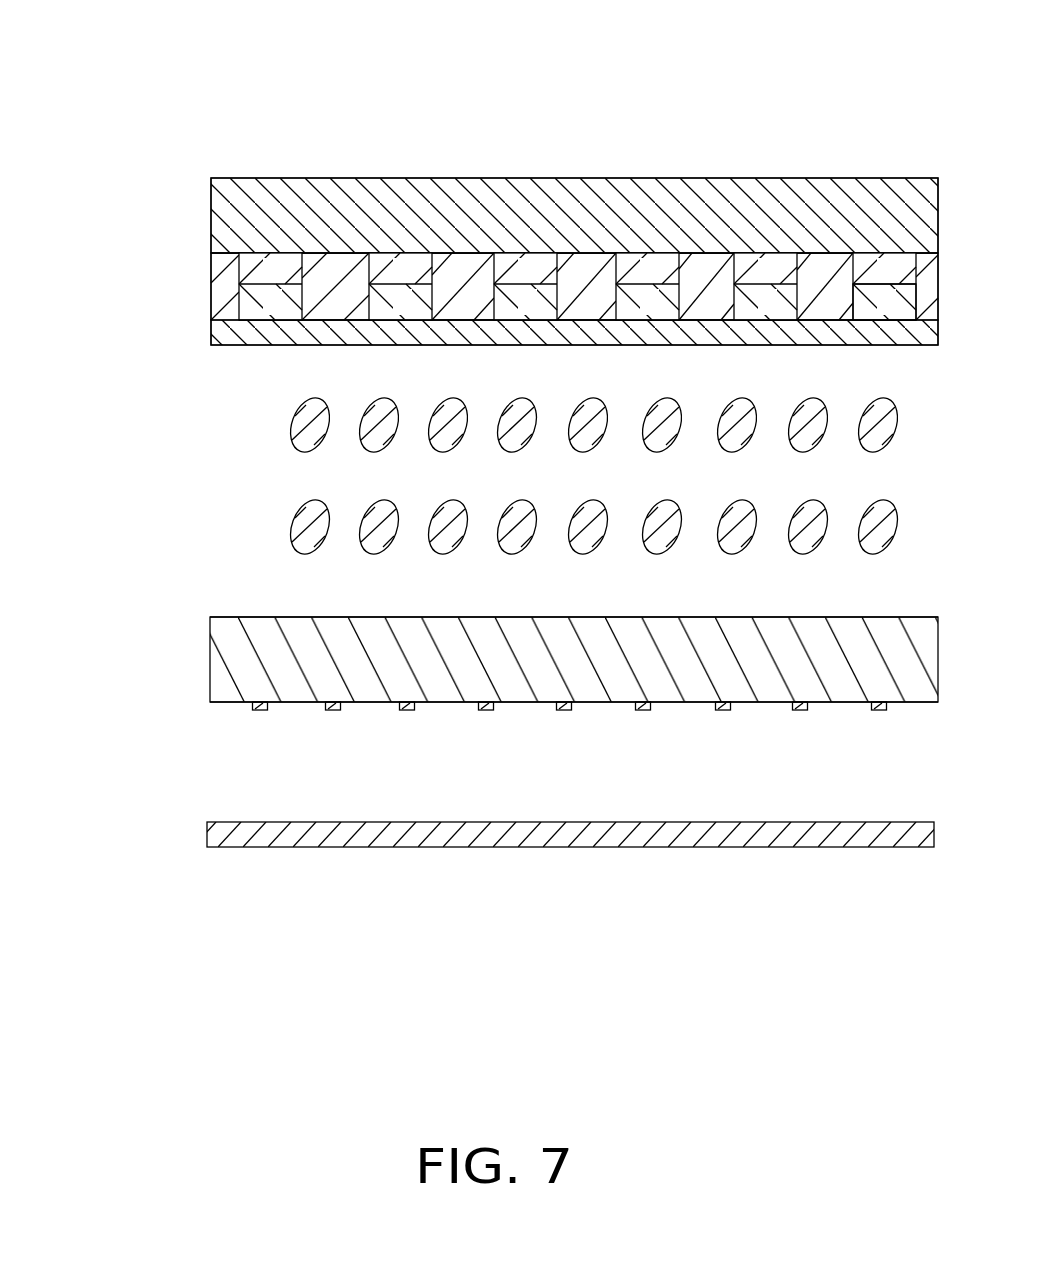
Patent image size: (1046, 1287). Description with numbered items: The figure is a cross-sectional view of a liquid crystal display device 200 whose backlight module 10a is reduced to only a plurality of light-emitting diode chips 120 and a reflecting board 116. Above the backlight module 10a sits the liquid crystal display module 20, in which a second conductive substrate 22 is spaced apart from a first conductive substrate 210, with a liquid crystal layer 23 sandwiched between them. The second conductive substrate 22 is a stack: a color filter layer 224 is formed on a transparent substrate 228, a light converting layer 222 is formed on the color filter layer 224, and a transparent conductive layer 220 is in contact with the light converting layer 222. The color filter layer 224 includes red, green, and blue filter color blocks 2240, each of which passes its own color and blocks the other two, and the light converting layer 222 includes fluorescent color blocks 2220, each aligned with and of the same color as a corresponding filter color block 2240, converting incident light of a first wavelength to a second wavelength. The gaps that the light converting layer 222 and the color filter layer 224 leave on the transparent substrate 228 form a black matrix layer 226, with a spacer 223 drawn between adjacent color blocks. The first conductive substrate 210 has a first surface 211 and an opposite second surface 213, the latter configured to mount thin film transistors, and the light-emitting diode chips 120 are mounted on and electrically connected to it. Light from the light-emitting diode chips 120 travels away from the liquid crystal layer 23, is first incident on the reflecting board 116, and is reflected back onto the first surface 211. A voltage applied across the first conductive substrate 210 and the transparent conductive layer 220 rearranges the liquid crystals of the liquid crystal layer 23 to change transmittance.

The liquid crystal display device 200 is at (513, 81).
The liquid crystal display module 20 is at (66, 247).
The second conductive substrate 22 is at (130, 178).
The transparent substrate 228 is at (238, 197).
The black matrix layer 226 is at (325, 275).
The color filter layer 224 is at (239, 268).
The light converting layer 222 is at (239, 302).
The transparent conductive layer 220 is at (225, 332).
The light shielding spacer 223 is at (367, 286).
The fluorescent color block 2220 is at (867, 293).
The filter color block 2240 is at (895, 267).
The liquid crystal layer 23 is at (307, 425).
The first conductive substrate 210 is at (267, 632).
The second surface 213 is at (845, 617).
The first surface 211 is at (900, 704).
The backlight module 10a is at (125, 748).
The light-emitting diode chips 120 is at (252, 706).
The reflecting board 116 is at (222, 830).